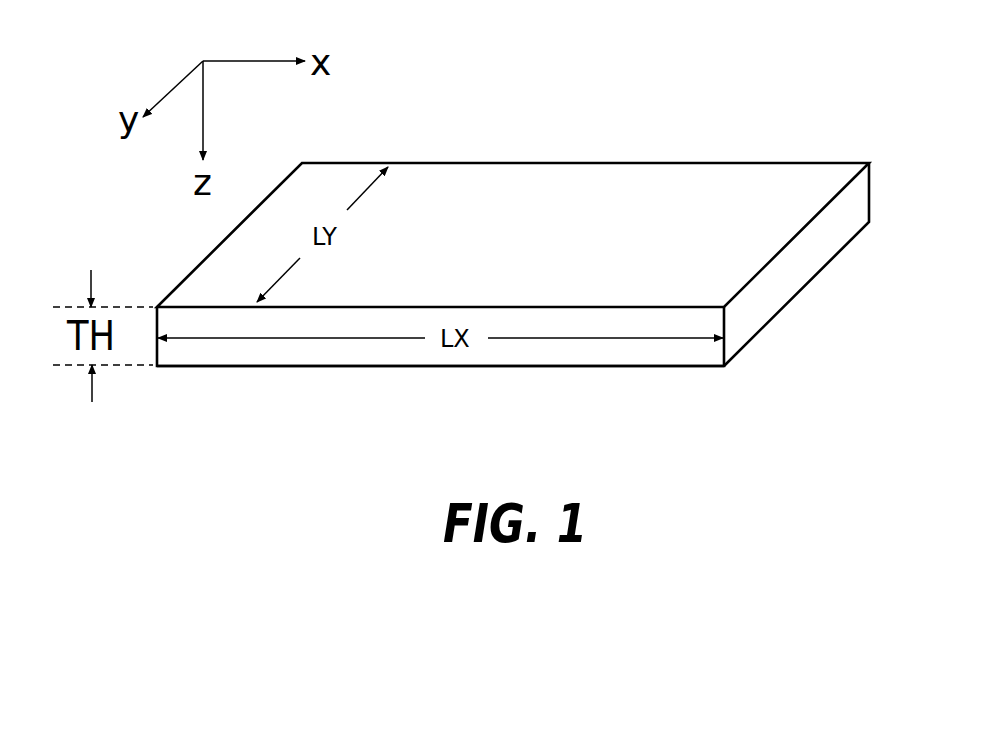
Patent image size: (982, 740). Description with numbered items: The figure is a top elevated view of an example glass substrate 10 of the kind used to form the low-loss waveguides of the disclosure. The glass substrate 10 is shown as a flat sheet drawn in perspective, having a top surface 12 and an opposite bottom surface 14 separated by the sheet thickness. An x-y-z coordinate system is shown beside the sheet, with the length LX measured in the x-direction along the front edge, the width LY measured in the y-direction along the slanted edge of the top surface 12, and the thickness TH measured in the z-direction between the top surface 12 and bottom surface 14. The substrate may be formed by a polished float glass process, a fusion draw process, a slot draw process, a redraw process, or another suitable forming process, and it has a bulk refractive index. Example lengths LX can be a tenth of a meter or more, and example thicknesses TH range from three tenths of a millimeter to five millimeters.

The glass substrate 10 is at (513, 215).
The top surface 12 is at (780, 178).
The bottom surface 14 is at (702, 367).